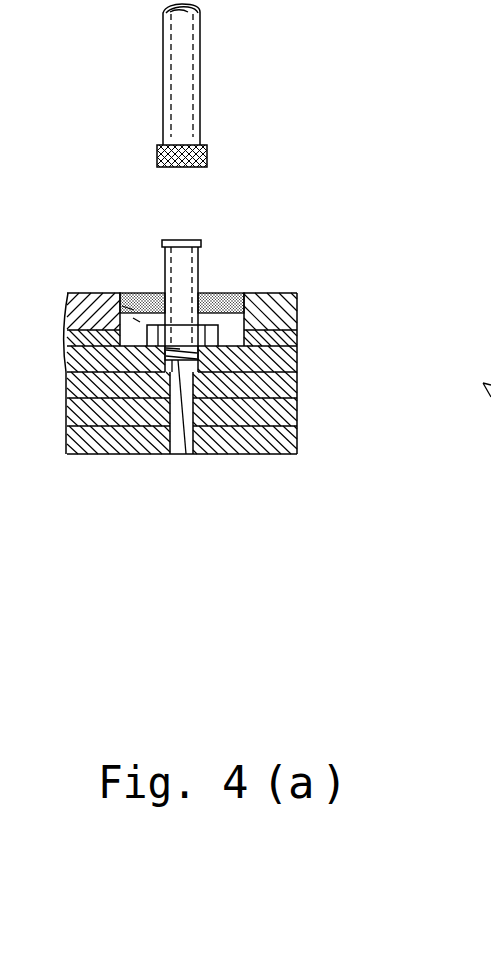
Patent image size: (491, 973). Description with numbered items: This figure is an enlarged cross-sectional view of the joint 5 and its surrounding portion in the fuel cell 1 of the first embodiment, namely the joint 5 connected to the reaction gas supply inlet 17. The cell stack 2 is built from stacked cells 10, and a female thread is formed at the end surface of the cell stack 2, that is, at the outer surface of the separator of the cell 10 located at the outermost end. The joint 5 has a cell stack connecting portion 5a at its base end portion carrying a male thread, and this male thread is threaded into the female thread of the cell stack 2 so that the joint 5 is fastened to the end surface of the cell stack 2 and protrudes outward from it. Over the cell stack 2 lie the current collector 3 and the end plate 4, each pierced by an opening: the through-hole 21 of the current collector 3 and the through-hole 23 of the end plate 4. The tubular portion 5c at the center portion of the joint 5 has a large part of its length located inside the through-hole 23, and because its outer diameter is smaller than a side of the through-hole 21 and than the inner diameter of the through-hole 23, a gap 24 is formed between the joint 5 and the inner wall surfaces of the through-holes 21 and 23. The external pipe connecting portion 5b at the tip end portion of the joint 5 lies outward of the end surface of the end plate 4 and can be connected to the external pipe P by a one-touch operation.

The external pipe P is at (187, 60).
The fuel cell 1 is at (418, 65).
The cell stack 2 is at (411, 376).
The current collector 3 is at (83, 338).
The end plate 4 is at (83, 313).
The joint 5 is at (411, 246).
The cell stack connecting portion 5a is at (215, 346).
The external pipe connecting portion 5b is at (201, 244).
The tubular portion 5c is at (185, 272).
The cell 10 is at (297, 363).
The reaction gas supply inlet 17 is at (182, 463).
The through-hole of the current collector 21 is at (66, 358).
The through-hole of the end plate 23 is at (132, 310).
The gap 24 is at (138, 322).